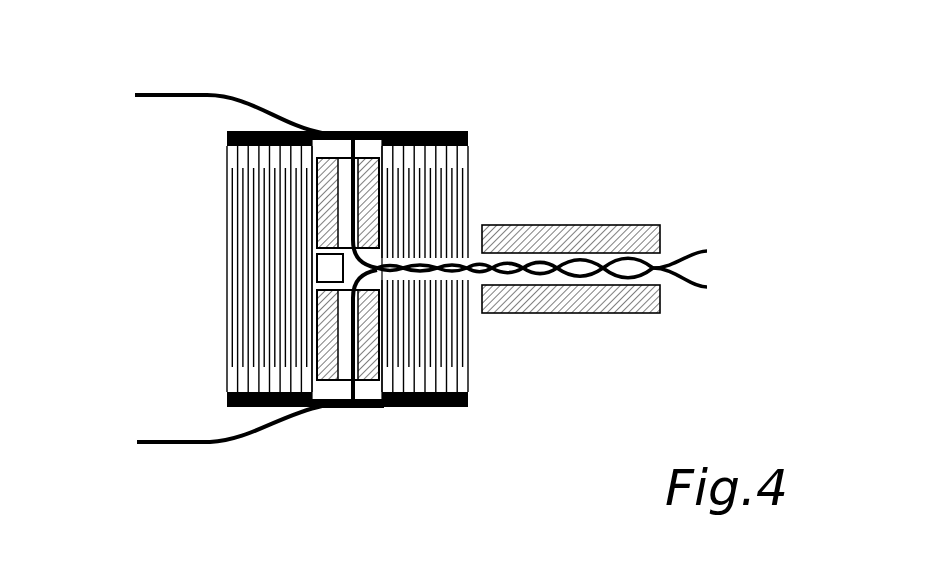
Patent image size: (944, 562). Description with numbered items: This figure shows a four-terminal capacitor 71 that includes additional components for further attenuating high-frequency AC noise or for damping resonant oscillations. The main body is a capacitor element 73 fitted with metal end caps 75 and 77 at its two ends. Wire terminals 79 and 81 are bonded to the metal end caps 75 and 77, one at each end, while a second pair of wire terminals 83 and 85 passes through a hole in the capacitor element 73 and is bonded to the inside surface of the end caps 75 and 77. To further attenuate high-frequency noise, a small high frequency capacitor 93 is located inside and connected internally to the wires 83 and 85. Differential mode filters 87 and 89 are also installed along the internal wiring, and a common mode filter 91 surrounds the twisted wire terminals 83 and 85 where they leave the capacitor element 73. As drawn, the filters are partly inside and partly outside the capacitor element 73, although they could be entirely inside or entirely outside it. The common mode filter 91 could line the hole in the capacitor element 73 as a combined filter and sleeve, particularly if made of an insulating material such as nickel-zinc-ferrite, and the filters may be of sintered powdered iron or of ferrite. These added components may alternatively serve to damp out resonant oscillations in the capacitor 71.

The capacitor 71 is at (180, 235).
The capacitor element 73 is at (488, 180).
The metal end cap 75 is at (455, 122).
The metal end cap 77 is at (473, 417).
The wire terminal 79 is at (177, 108).
The wire terminal 81 is at (160, 428).
The wire terminal 83 is at (687, 243).
The wire terminal 85 is at (700, 300).
The differential mode filter 87 is at (333, 153).
The differential mode filter 89 is at (328, 375).
The common mode filter 91 is at (595, 320).
The high frequency capacitor 93 is at (328, 270).